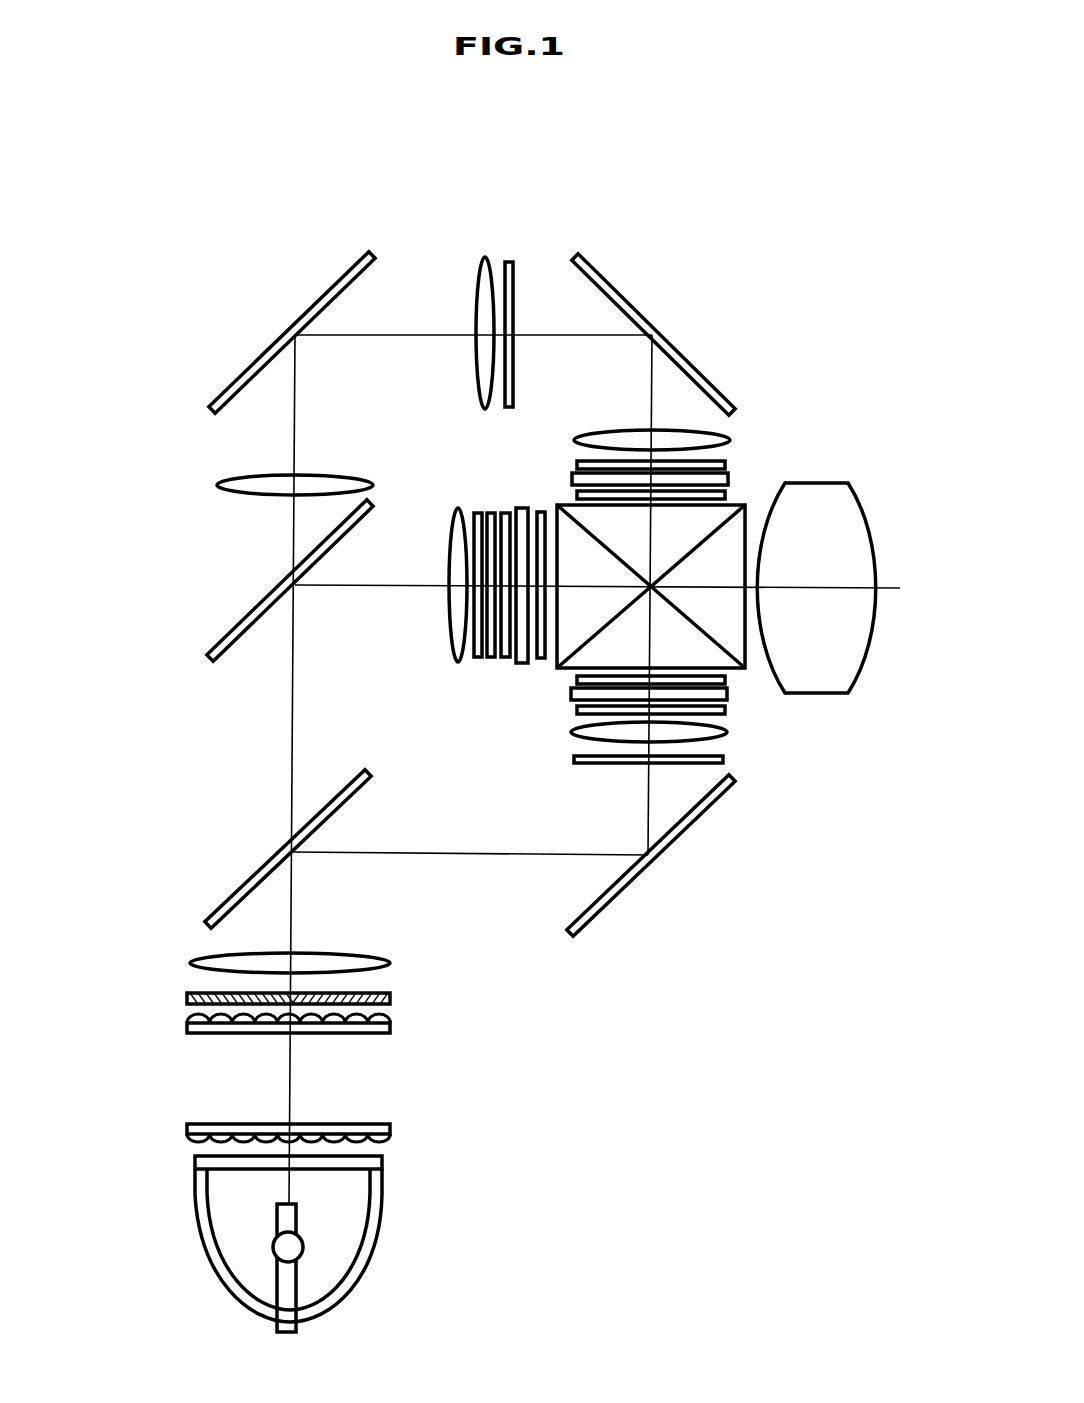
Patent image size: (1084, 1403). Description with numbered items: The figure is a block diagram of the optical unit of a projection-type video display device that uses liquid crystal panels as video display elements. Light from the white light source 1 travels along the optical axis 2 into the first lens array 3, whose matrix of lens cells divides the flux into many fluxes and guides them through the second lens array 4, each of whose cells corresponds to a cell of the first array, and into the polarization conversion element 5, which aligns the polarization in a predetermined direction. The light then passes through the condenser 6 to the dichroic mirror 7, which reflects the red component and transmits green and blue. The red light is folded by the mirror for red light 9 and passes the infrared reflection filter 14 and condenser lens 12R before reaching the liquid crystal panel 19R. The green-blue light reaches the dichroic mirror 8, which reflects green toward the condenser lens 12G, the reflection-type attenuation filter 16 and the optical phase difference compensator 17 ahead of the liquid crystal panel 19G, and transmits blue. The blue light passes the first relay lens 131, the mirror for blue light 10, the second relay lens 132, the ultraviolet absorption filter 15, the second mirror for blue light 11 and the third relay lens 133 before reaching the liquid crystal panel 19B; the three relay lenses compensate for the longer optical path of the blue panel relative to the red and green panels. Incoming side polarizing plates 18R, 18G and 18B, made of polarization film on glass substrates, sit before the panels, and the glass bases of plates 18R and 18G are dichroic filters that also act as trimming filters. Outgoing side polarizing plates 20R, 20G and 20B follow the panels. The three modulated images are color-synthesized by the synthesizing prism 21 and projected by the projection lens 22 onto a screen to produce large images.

The white light source 1 is at (377, 1223).
The optical axis 2 is at (290, 1080).
The first lens array 3 is at (390, 1128).
The second lens array 4 is at (390, 1028).
The polarization conversion element 5 is at (390, 998).
The condenser 6 is at (390, 960).
The dichroic mirror 7 is at (232, 897).
The dichroic mirror 8 is at (233, 628).
The mirror for red light 9 is at (637, 877).
The mirror for blue light 10 is at (272, 343).
The mirror for blue light 11 is at (598, 268).
The condenser lens 12G is at (450, 628).
The condenser lens 12R is at (570, 733).
The infrared reflection filter 14 is at (575, 763).
The ultraviolet absorption filter 15 is at (510, 262).
The reflection-type attenuation filter 16 is at (478, 662).
The optical phase difference compensator 17 is at (505, 662).
The incoming side polarizing plate 18G is at (490, 662).
The incoming side polarizing plate 18B is at (577, 461).
The incoming side polarizing plate 18R is at (725, 710).
The liquid crystal panel 19G is at (522, 662).
The liquid crystal panel 19B is at (728, 479).
The liquid crystal panel 19R is at (728, 695).
The outgoing side polarizing plate 20G is at (542, 662).
The outgoing side polarizing plate 20B is at (725, 495).
The outgoing side polarizing plate 20R is at (727, 680).
The synthesizing prism 21 is at (558, 505).
The projection lens 22 is at (850, 482).
The first relay lens 131 is at (233, 477).
The second relay lens 132 is at (485, 258).
The third relay lens 133 is at (595, 428).